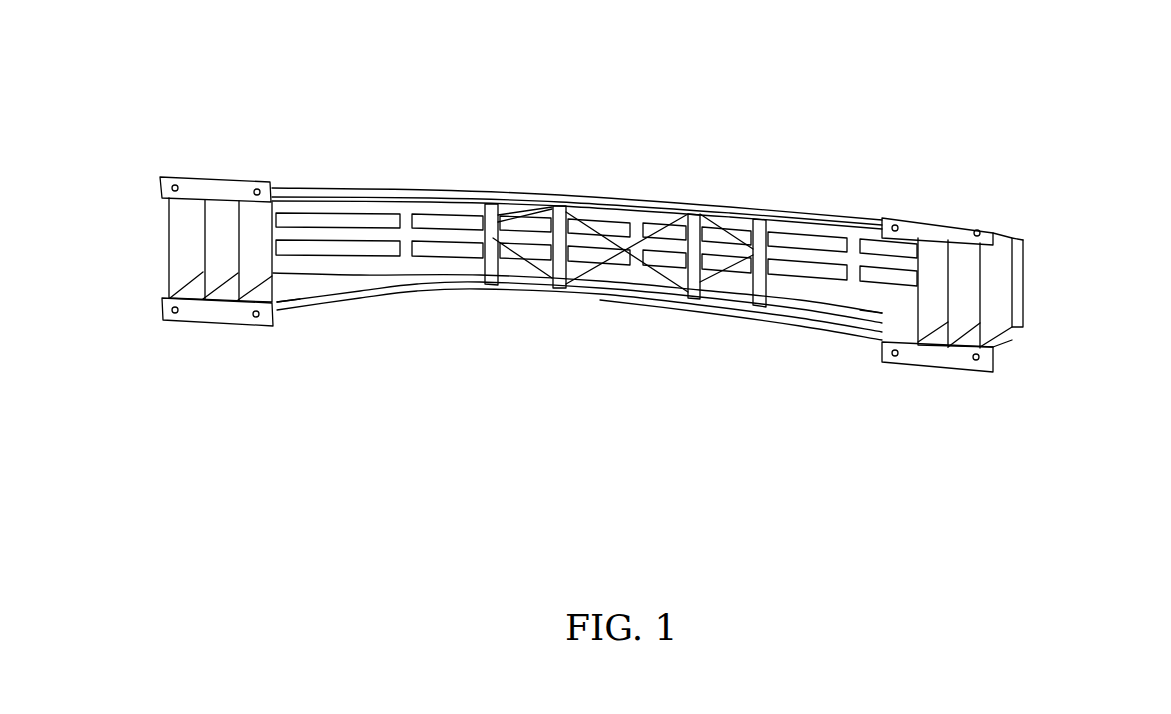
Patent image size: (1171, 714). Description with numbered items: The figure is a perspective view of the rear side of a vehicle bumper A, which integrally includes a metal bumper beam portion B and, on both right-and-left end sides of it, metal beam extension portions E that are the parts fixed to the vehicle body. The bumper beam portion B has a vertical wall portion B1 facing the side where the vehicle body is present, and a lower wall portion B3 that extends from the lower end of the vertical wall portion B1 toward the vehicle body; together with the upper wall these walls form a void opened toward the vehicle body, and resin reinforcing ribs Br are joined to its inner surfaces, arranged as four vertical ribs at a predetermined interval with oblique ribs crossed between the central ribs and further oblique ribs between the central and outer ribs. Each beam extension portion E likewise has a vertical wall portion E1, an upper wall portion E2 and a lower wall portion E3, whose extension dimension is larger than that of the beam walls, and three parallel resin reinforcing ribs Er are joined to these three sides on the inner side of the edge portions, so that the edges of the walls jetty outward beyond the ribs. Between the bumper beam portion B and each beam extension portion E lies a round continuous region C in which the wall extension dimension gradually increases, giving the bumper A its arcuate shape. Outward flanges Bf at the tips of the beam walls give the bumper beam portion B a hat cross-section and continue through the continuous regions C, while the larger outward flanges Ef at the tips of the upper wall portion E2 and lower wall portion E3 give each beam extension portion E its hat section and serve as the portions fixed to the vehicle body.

The vehicle bumper A is at (817, 153).
The bumper beam portion B is at (797, 205).
The outward flange Bf is at (478, 197).
The reinforcing rib Br is at (652, 238).
The vertical wall portion B1 is at (450, 237).
The lower wall portion B3 is at (633, 287).
The continuous region C is at (297, 287).
The beam extension portion E is at (163, 328).
The outward flange Ef is at (211, 187).
The reinforcing rib Er is at (217, 257).
The vertical wall portion E1 is at (1022, 268).
The upper wall portion E2 is at (1008, 238).
The lower wall portion E3 is at (229, 292).